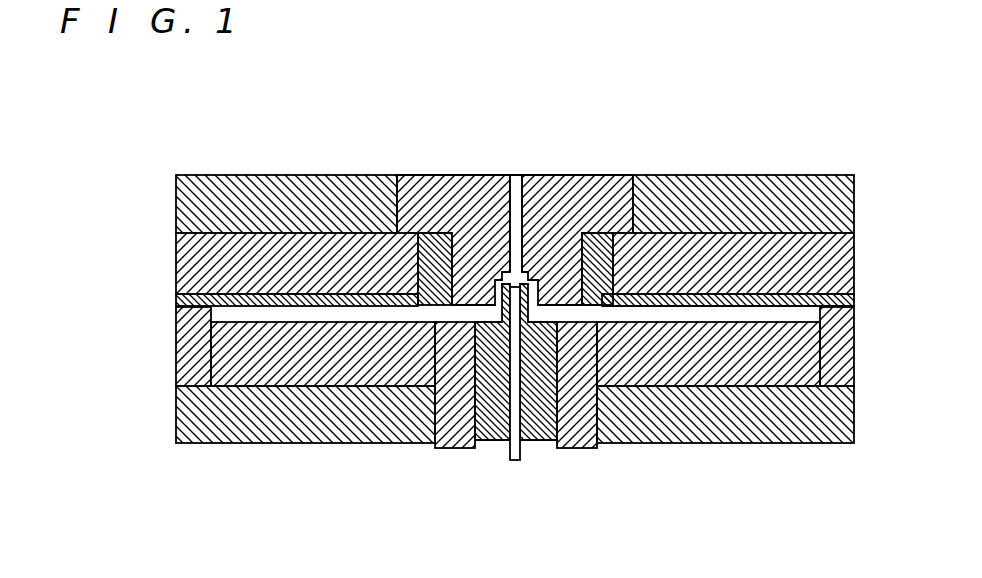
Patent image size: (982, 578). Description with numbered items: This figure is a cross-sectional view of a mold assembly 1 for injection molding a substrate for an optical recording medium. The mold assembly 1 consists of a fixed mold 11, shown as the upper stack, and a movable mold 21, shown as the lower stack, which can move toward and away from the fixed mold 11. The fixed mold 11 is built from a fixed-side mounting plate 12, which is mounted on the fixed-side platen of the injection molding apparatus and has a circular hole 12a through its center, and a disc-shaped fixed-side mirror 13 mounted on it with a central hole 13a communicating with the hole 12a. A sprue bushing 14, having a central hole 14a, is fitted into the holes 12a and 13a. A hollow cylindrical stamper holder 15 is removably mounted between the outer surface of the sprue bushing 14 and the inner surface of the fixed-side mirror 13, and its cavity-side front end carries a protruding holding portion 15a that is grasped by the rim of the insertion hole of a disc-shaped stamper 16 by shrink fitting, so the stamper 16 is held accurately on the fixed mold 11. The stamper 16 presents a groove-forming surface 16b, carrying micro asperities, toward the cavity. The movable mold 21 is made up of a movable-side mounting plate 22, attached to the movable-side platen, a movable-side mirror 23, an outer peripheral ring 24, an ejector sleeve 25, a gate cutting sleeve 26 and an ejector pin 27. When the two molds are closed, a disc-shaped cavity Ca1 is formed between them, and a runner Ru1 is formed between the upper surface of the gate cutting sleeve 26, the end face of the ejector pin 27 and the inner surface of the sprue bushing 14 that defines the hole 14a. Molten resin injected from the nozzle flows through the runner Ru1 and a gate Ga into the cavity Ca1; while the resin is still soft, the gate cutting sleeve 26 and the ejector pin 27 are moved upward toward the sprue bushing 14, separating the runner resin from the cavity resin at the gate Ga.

The mold assembly 1 is at (513, 94).
The fixed mold 11 is at (782, 136).
The fixed-side mounting plate 12 is at (855, 190).
The hole 12a is at (403, 208).
The fixed-side mirror 13 is at (845, 252).
The hole 13a is at (457, 260).
The sprue bushing 14 is at (552, 212).
The hole 14a is at (516, 176).
The stamper holder 15 is at (602, 232).
The holding portion 15a is at (599, 307).
The stamper 16 is at (853, 300).
The groove-forming surface 16b is at (790, 312).
The movable mold 21 is at (797, 499).
The movable-side mounting plate 22 is at (848, 428).
The movable-side mirror 23 is at (762, 368).
The outer peripheral ring 24 is at (854, 355).
The ejector sleeve 25 is at (590, 449).
The gate cutting sleeve 26 is at (543, 440).
The ejector pin 27 is at (518, 462).
The cavity Ca1 is at (366, 313).
The gate Ga is at (507, 273).
The runner Ru1 is at (519, 281).